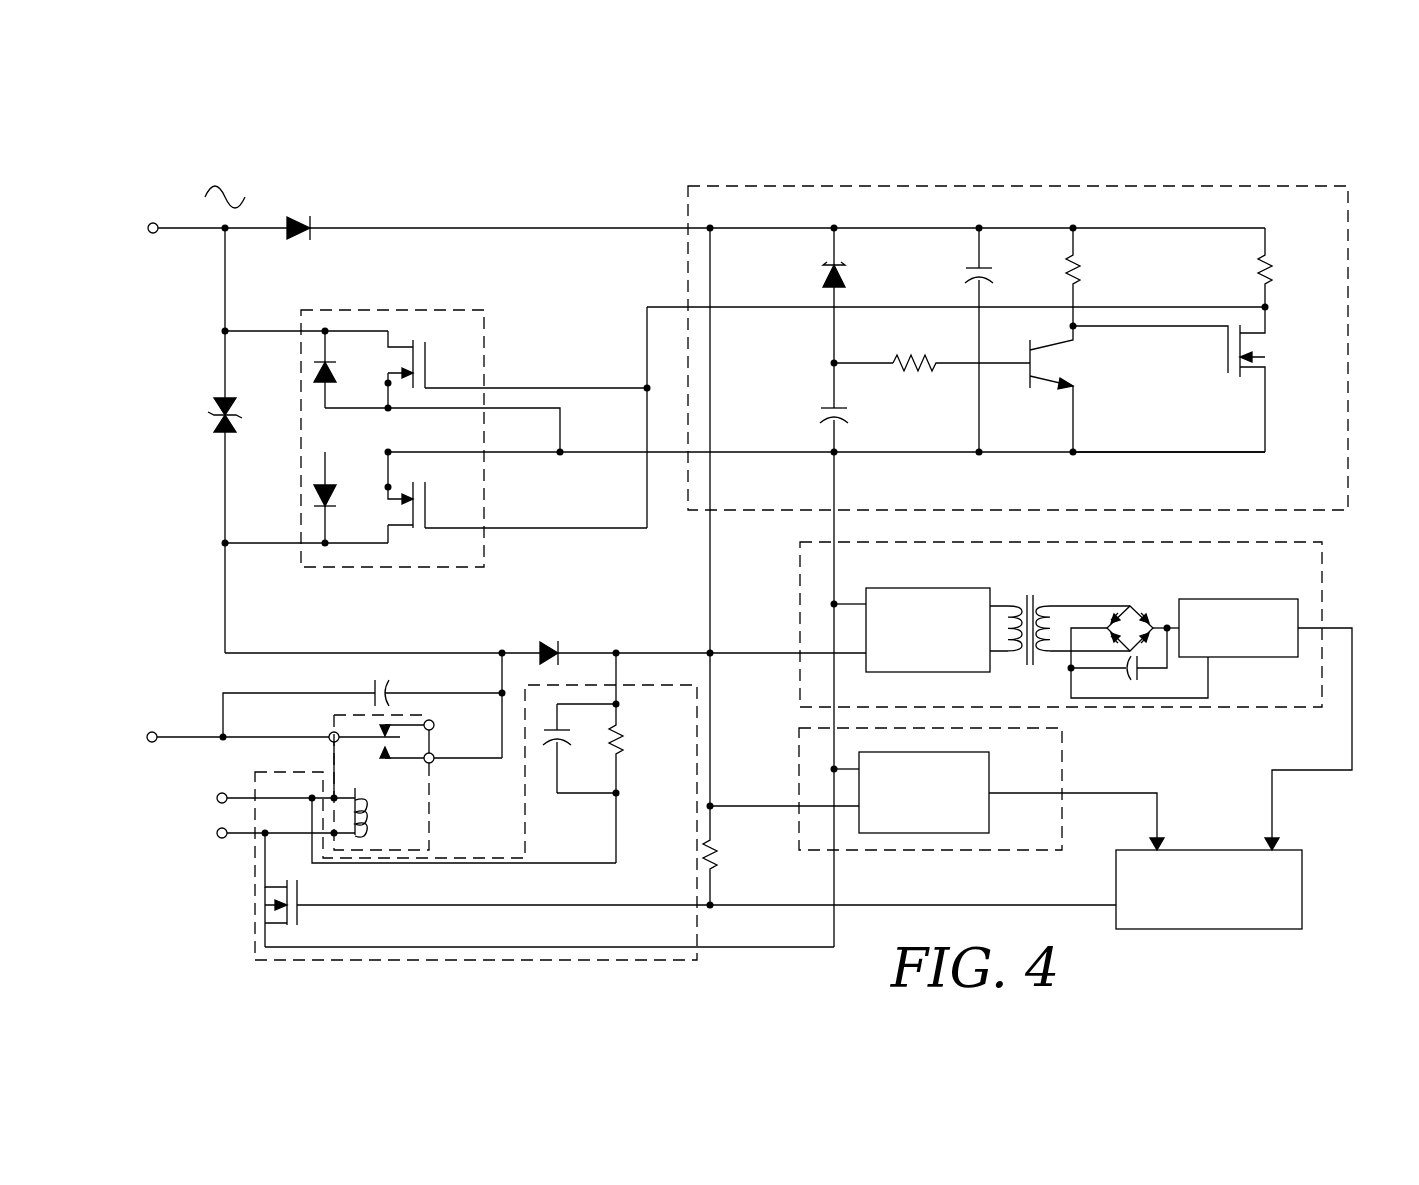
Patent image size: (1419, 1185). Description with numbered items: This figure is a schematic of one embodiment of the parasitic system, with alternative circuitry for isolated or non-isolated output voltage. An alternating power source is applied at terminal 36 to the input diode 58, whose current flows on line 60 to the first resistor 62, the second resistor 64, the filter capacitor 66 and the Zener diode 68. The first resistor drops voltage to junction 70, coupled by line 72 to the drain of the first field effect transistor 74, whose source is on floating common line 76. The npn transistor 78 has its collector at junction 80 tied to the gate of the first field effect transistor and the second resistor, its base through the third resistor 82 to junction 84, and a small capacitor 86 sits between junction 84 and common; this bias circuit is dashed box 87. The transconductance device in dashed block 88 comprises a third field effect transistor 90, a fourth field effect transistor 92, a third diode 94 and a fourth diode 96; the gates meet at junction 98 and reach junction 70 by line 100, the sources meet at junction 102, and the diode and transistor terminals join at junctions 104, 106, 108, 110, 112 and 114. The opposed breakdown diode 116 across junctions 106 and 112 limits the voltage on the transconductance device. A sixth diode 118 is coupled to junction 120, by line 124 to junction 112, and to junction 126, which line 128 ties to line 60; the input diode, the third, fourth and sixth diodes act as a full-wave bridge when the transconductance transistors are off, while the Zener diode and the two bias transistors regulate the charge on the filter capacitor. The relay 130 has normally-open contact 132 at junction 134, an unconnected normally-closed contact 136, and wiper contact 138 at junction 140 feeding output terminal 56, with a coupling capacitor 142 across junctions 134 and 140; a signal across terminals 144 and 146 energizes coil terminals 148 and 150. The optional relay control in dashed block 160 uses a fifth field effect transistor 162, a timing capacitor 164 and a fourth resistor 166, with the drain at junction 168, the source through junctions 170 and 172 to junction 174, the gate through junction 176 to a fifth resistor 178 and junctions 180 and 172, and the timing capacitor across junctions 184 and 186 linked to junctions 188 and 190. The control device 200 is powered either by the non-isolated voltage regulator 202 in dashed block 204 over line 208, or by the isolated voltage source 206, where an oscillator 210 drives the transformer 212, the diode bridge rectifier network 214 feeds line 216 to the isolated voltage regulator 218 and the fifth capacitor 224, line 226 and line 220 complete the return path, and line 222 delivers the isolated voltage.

The terminal 36 is at (154, 222).
The output terminal 56 is at (154, 730).
The diode D1 58 is at (312, 235).
The line 60 is at (875, 228).
The resistor R1 62 is at (1268, 262).
The resistor R2 64 is at (1078, 272).
The capacitor C1 66 is at (975, 268).
The Zener diode D2 68 is at (838, 281).
The junction 70 is at (1266, 307).
The line 72 is at (1268, 318).
The field effect transistor Q1 74 is at (1272, 358).
The common line 76 is at (1195, 453).
The transistor Q2 78 is at (1082, 370).
The junction 80 is at (1073, 326).
The resistor R3 82 is at (905, 370).
The junction 84 is at (834, 363).
The capacitor C2 86 is at (828, 408).
The dashed box 87 is at (688, 205).
The dashed block 88 is at (484, 308).
The FET Q3 90 is at (403, 343).
The FET Q4 92 is at (420, 537).
The diode D3 94 is at (318, 373).
The diode D4 96 is at (318, 492).
The junction 98 is at (648, 389).
The line 100 is at (734, 310).
The junction 102 is at (560, 453).
The junction 104 is at (325, 330).
The junction 106 is at (225, 331).
The junction 108 is at (390, 410).
The junction 110 is at (325, 545).
The junction 112 is at (225, 543).
The junction 114 is at (388, 451).
The opposed breakdown diode D5 116 is at (215, 432).
The diode D6 118 is at (538, 648).
The junction 120 is at (502, 653).
The line 124 is at (335, 653).
The junction 126 is at (708, 652).
The line 128 is at (712, 477).
The relay K1 130 is at (430, 818).
The normally-open contact 132 is at (431, 758).
The node 134 is at (502, 693).
The normally-closed contact 136 is at (431, 725).
The wiper contact 138 is at (333, 735).
The junction 140 is at (224, 740).
The capacitor C3 142 is at (375, 690).
The terminal 144 is at (217, 798).
The terminal 146 is at (217, 833).
The coil terminal 148 is at (334, 780).
The coil terminal 150 is at (355, 840).
The dashed block 160 is at (255, 905).
The FET Q5 162 is at (312, 893).
The capacitor C4 164 is at (563, 734).
The resistor R4 166 is at (615, 755).
The junction 168 is at (265, 835).
The junction 170 is at (834, 769).
The junction 172 is at (834, 604).
The junction 174 is at (836, 455).
The junction 176 is at (710, 905).
The resistor R5 178 is at (715, 860).
The junction 180 is at (710, 806).
The junction 184 is at (615, 794).
The junction 186 is at (617, 704).
The junction 188 is at (616, 653).
The junction 190 is at (312, 798).
The control device 200 is at (1116, 868).
The voltage regulator 202 is at (903, 833).
The dashed block 204 is at (1062, 745).
The isolated voltage source 206 is at (1255, 707).
The line 208 is at (1117, 793).
The oscillator 210 is at (895, 588).
The transformer T1 212 is at (1048, 590).
The diode bridge rectifier network D7 214 is at (1136, 606).
The line 216 is at (1167, 625).
The voltage regulator 218 is at (1232, 599).
The line 220 is at (1150, 698).
The line 222 is at (1352, 710).
The capacitor C5 224 is at (1128, 672).
The line 226 is at (1070, 668).